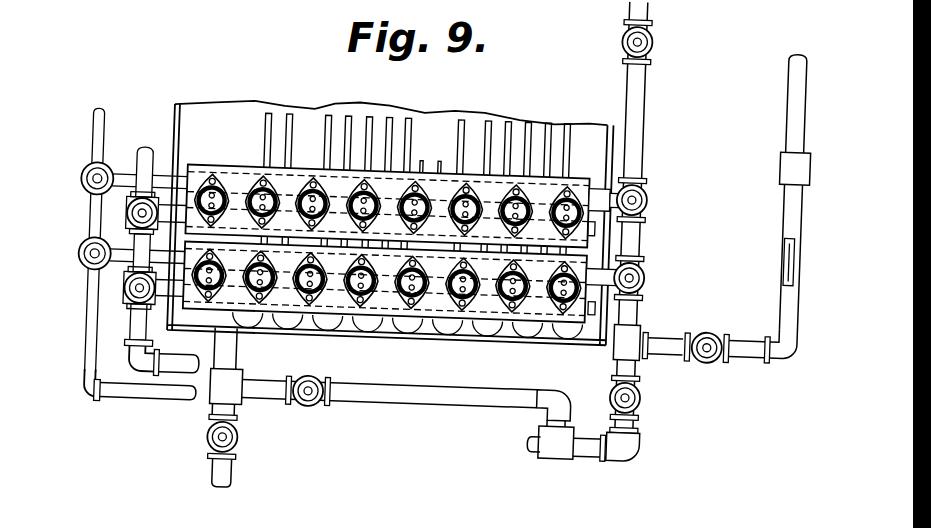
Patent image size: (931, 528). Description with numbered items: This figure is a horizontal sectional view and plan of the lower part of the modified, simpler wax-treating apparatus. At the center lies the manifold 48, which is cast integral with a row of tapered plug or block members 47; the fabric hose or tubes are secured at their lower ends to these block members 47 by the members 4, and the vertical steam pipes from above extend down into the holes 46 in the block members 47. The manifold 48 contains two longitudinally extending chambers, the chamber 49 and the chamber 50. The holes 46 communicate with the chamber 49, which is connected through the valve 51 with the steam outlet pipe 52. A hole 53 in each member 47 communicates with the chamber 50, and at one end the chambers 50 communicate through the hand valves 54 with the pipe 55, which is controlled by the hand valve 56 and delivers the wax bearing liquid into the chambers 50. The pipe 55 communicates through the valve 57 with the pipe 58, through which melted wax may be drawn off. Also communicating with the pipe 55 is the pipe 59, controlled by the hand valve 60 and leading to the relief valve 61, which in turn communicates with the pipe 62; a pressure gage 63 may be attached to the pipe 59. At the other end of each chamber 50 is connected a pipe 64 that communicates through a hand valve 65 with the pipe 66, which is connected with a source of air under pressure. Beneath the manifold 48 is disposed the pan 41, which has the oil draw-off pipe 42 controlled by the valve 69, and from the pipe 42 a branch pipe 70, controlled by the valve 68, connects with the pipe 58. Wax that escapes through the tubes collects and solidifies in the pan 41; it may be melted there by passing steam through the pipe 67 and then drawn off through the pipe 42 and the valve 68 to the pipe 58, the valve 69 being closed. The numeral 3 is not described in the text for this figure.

The end fitting 3 is at (563, 189).
The securing member 4 is at (510, 188).
The pan 41 is at (413, 325).
The oil draw-off pipe 42 is at (225, 346).
The hole 46 is at (216, 219).
The tapered plug or block member 47 is at (267, 215).
The manifold 48 is at (388, 180).
The chamber 49 is at (600, 245).
The chamber 50 is at (302, 175).
The valve 51 is at (127, 222).
The steam outlet pipe 52 is at (135, 164).
The hole 53 is at (218, 196).
The hand valve 54 is at (641, 192).
The pipe 55 is at (629, 120).
The hand valve 56 is at (646, 34).
The valve 57 is at (645, 394).
The pipe 58 is at (604, 446).
The pipe 59 is at (666, 331).
The hand valve 60 is at (719, 324).
The relief valve 61 is at (790, 154).
The pipe 62 is at (794, 79).
The pressure gage 63 is at (785, 252).
The pipe 64 is at (161, 188).
The hand valve 65 is at (88, 183).
The pipe 66 is at (93, 139).
The pipe 67 is at (534, 128).
The valve 68 is at (313, 401).
The valve 69 is at (244, 434).
The branch pipe 70 is at (273, 392).